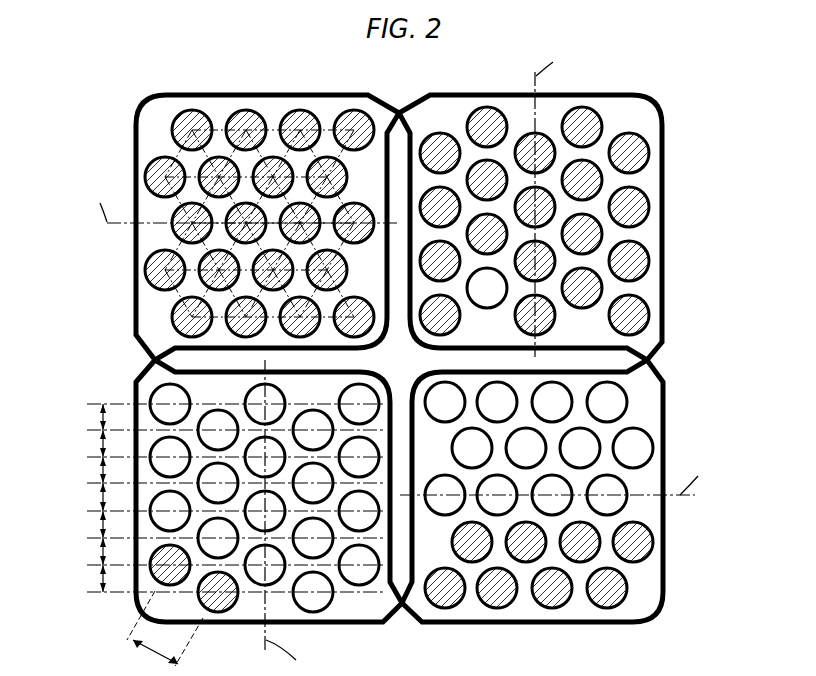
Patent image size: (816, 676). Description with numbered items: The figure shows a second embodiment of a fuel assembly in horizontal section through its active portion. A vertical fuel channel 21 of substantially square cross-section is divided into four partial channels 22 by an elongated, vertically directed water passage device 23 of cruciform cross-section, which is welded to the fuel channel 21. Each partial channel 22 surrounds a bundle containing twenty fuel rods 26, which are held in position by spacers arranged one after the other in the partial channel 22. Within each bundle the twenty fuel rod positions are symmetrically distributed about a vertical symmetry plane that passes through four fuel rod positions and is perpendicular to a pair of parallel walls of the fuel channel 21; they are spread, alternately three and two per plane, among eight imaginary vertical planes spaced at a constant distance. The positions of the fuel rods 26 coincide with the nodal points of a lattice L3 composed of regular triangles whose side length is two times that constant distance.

The fuel channel 21 is at (663, 203).
The partial channel 22 is at (627, 113).
The water passage device 23 is at (600, 373).
The fuel rods 26 is at (560, 592).
The lattice L3 is at (272, 128).